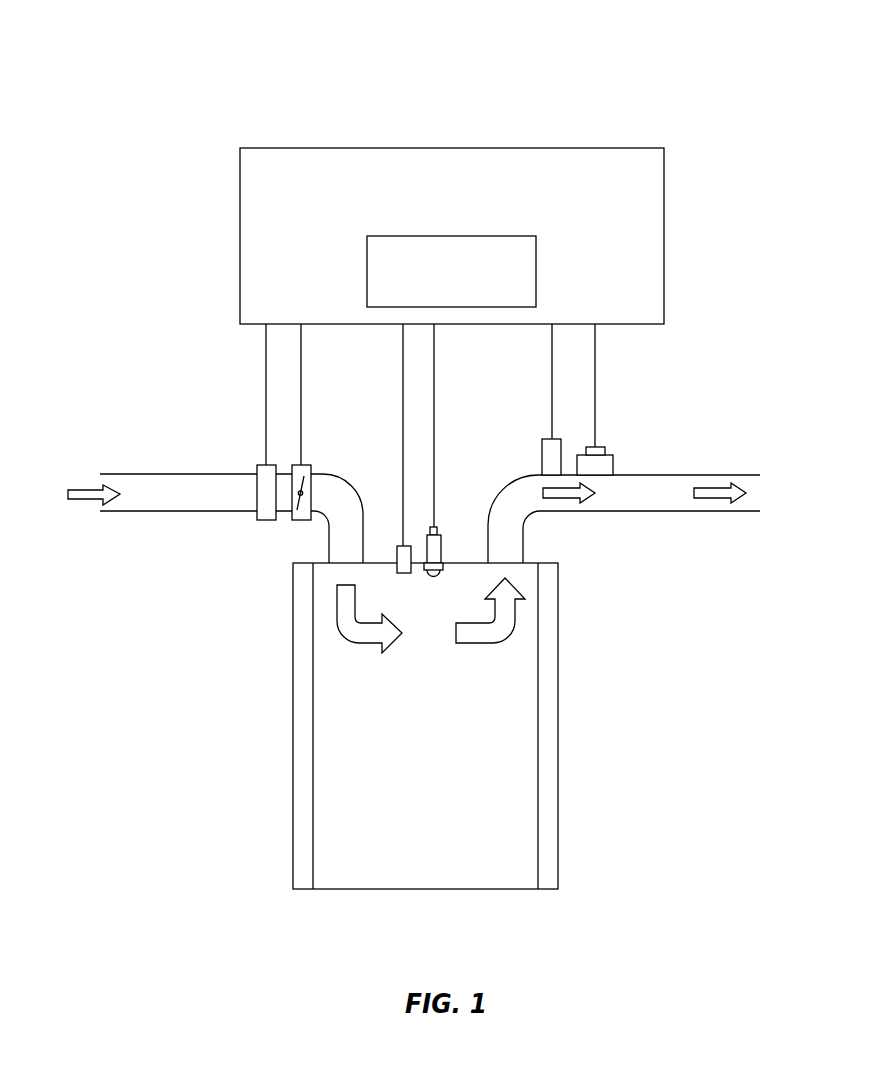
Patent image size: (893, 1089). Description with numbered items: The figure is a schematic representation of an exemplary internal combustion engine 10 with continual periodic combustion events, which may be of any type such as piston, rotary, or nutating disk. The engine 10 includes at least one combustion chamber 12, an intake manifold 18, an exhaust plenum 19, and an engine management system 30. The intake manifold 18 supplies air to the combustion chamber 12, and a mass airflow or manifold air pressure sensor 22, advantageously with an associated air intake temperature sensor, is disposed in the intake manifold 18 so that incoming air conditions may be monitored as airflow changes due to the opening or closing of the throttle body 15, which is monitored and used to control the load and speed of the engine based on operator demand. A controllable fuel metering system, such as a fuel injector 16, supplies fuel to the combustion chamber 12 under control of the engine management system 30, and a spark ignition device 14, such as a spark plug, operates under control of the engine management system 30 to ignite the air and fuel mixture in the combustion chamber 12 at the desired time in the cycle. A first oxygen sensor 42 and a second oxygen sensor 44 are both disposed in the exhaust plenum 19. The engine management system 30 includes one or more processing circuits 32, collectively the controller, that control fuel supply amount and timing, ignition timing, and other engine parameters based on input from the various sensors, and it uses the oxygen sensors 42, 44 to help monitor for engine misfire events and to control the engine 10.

The internal combustion engine 10 is at (727, 76).
The combustion chamber 12 is at (438, 768).
The spark ignition device 14 is at (441, 548).
The throttle body 15 is at (311, 468).
The fuel injector 16 is at (396, 547).
The intake manifold 18 is at (127, 478).
The exhaust plenum 19 is at (613, 495).
The mass airflow sensor or manifold air pressure sensor 22 is at (257, 466).
The engine management system 30 is at (567, 148).
The processing circuits 32 is at (466, 291).
The first oxygen sensor 42 is at (613, 458).
The second oxygen sensor 44 is at (542, 440).